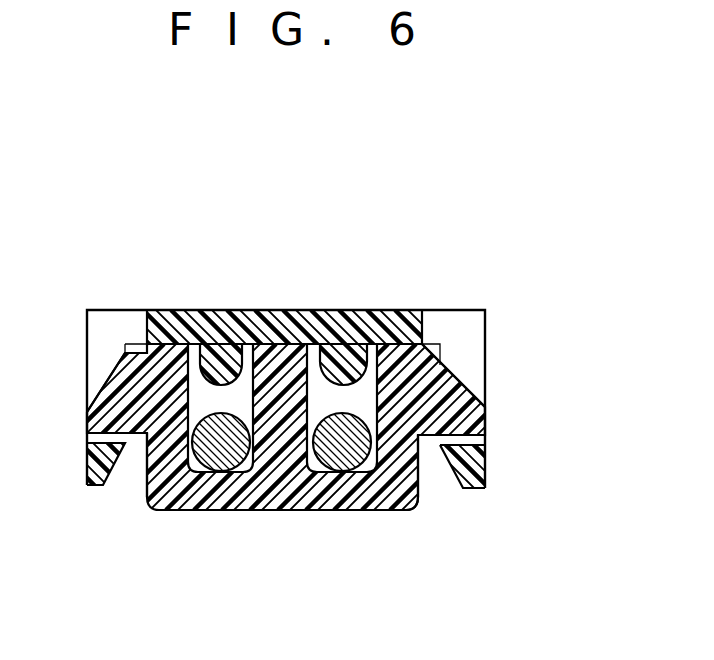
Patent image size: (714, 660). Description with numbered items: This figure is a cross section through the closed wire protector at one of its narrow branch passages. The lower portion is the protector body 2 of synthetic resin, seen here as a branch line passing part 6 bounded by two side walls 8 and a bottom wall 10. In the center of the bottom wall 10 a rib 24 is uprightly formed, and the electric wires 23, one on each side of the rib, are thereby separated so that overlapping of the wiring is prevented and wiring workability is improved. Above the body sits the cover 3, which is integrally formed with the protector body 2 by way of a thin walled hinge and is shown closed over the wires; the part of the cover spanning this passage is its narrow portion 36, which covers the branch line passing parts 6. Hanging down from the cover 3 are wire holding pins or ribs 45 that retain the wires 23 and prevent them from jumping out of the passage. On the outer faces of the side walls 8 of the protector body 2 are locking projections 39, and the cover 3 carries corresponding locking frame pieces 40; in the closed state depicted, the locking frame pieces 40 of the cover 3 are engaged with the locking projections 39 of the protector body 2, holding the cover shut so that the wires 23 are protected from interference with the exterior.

The protector body 2 is at (395, 520).
The cover 3 is at (477, 293).
The branch line passing part 6 is at (423, 481).
The side wall 8 is at (152, 452).
The bottom wall 10 is at (333, 496).
The electric wire 23 is at (220, 463).
The rib 24 is at (318, 348).
The narrow portion 36 is at (395, 308).
The locking projection 39 is at (455, 400).
The locking frame piece 40 is at (486, 473).
The wire holding pin or rib 45 is at (222, 364).